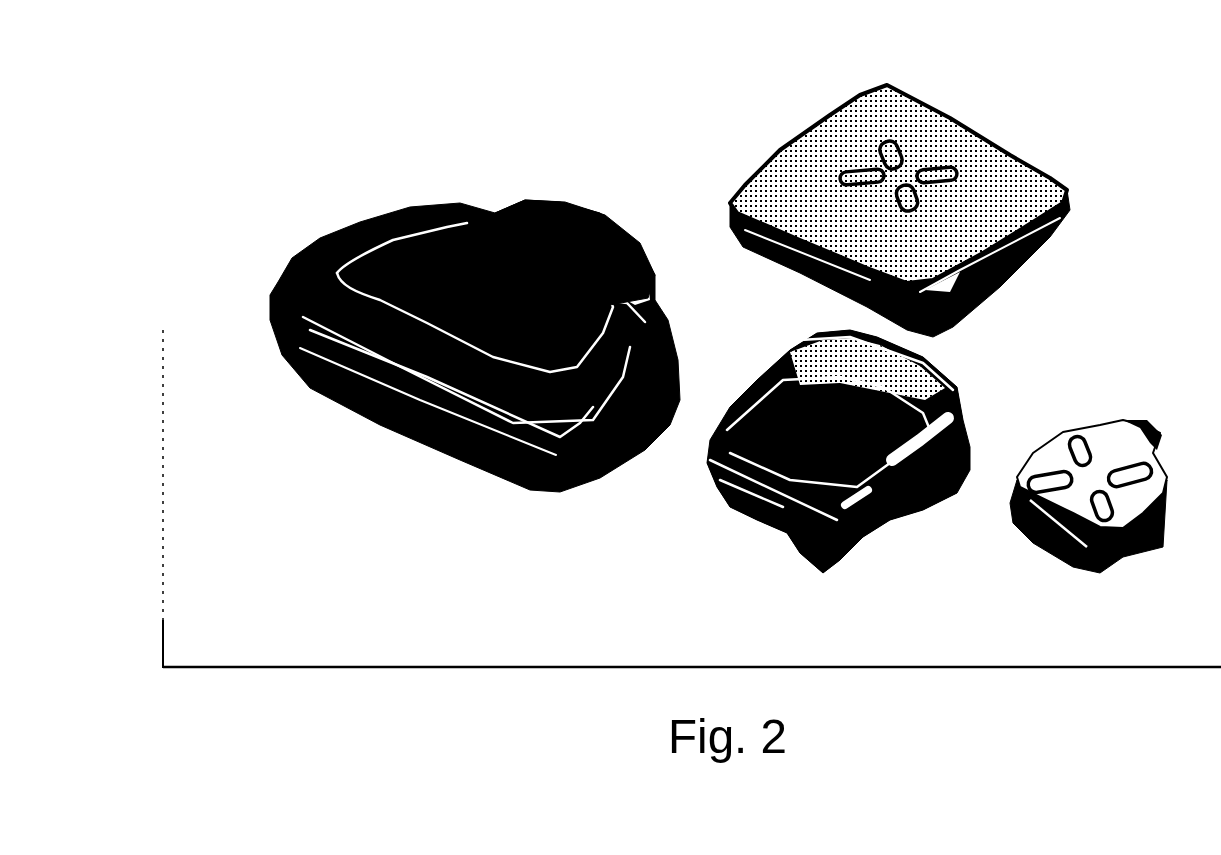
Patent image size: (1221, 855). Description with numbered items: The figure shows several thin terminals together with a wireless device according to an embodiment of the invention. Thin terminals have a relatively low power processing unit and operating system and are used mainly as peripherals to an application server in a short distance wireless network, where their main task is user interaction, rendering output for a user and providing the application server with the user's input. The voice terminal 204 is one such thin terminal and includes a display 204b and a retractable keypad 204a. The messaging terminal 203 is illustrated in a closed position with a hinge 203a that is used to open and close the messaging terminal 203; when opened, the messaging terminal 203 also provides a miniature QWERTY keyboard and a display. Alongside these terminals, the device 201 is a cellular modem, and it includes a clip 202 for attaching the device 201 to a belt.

The device 201 is at (775, 131).
The clip 202 is at (1123, 538).
The messaging terminal 203 is at (400, 395).
The hinge 203a is at (513, 195).
The voice terminal 204 is at (840, 465).
The retractable keypad 204a is at (717, 473).
The display 204b is at (893, 403).